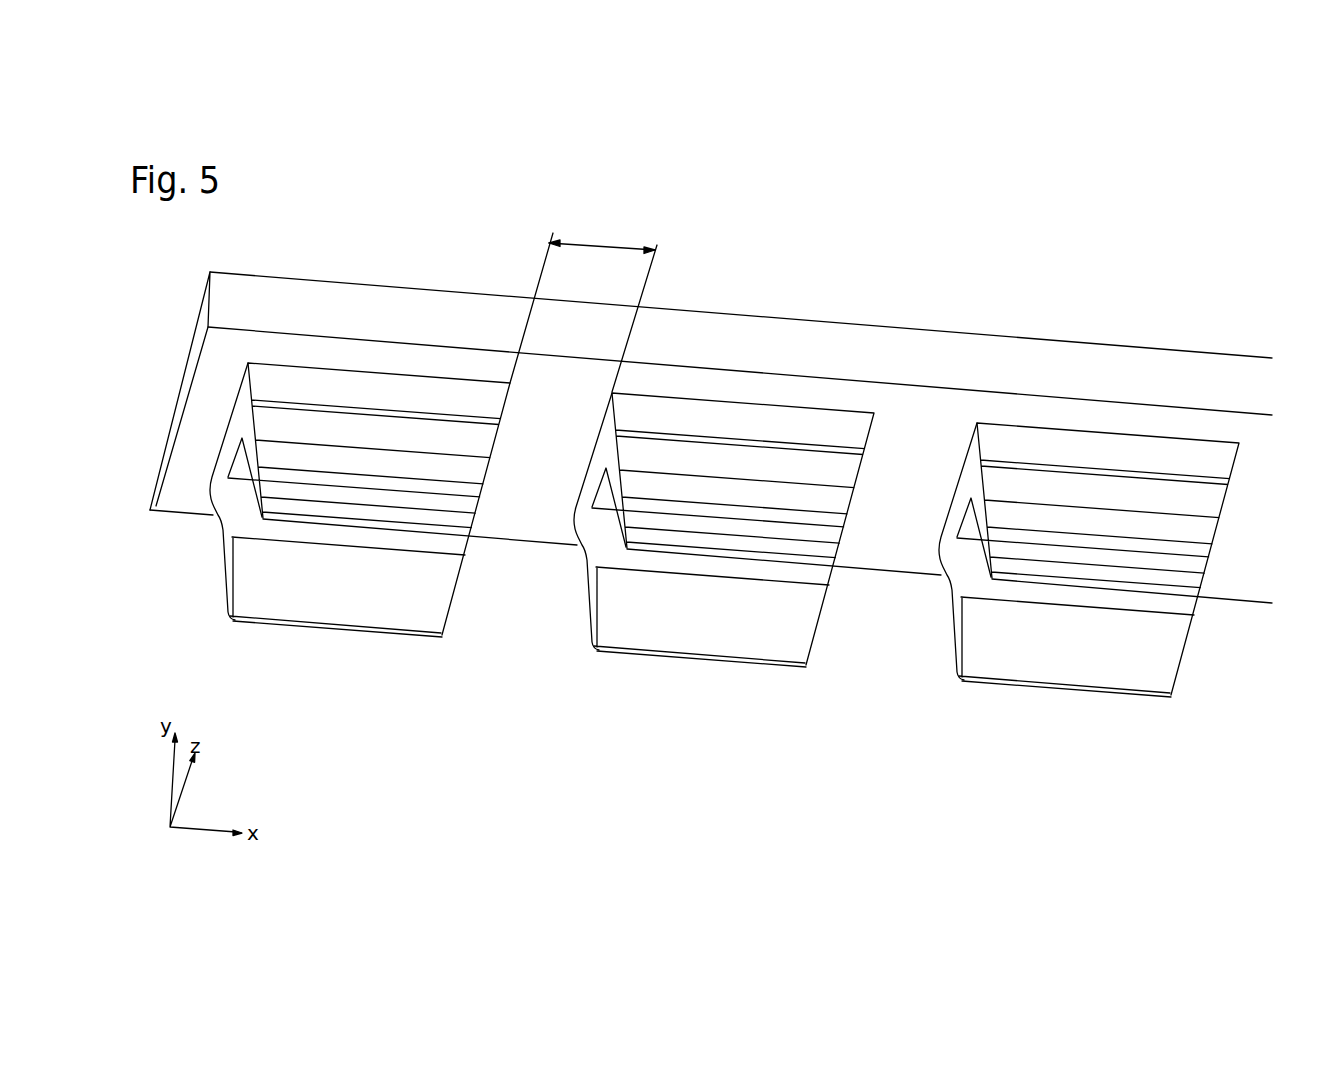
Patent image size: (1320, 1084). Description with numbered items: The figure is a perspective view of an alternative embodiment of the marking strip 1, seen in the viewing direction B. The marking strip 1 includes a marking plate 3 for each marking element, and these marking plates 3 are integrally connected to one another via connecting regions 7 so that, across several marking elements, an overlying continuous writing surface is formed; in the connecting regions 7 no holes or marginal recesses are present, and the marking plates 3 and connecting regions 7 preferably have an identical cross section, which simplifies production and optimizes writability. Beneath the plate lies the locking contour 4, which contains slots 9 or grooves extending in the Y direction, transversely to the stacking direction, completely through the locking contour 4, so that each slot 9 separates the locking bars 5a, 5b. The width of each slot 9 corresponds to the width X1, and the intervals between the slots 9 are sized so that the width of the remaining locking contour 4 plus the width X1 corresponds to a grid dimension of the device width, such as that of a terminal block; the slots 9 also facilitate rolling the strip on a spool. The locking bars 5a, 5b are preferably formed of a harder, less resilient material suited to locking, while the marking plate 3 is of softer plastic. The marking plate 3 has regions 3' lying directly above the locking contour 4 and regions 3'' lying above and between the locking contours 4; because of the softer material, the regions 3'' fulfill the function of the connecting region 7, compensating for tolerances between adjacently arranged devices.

The marking strip 1 is at (1234, 294).
The marking plate 3 is at (733, 478).
The regions of the marking plate above the locking contour 3' is at (740, 306).
The regions of the marking plate between the locking contours 3'' is at (711, 588).
The locking contour 4 is at (175, 402).
The locking bar 5a is at (225, 588).
The locking bar 5b is at (252, 487).
The connecting region 7 is at (582, 313).
The slot 9 is at (522, 632).
The viewing direction B is at (333, 262).
The width of the slot X1 is at (602, 234).